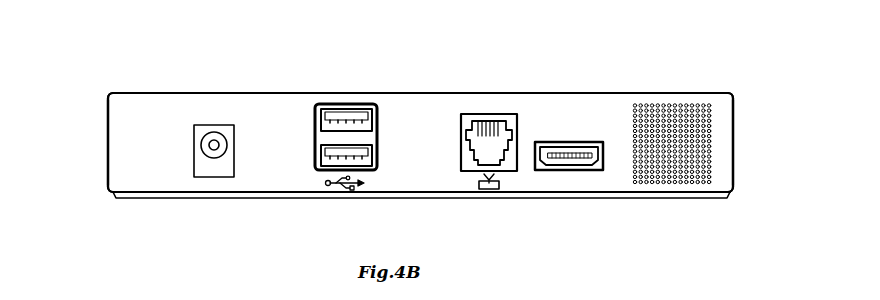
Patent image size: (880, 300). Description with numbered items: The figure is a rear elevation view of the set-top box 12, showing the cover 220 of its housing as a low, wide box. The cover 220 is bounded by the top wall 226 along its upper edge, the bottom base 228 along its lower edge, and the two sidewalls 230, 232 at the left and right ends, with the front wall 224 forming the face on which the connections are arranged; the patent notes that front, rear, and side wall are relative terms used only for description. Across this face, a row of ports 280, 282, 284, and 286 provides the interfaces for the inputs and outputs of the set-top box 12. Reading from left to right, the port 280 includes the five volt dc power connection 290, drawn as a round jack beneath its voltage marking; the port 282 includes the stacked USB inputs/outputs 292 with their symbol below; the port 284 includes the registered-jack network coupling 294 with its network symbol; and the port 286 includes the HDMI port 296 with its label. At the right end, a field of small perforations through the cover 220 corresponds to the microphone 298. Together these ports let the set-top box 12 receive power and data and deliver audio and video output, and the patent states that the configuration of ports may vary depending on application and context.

The set-top box 12 is at (132, 80).
The cover 220 is at (707, 85).
The front wall 224 is at (143, 184).
The top wall 226 is at (181, 93).
The bottom base 228 is at (270, 199).
The sidewall 230 is at (108, 145).
The sidewall 232 is at (733, 142).
The port 280 is at (228, 126).
The port 282 is at (343, 105).
The port 284 is at (490, 114).
The port 286 is at (569, 142).
The 5V dc power connection 290 is at (212, 172).
The USB inputs/outputs 292 is at (326, 170).
The RJ-45 coupling 294 is at (509, 171).
The HDMI port 296 is at (600, 171).
The microphone 298 is at (676, 183).